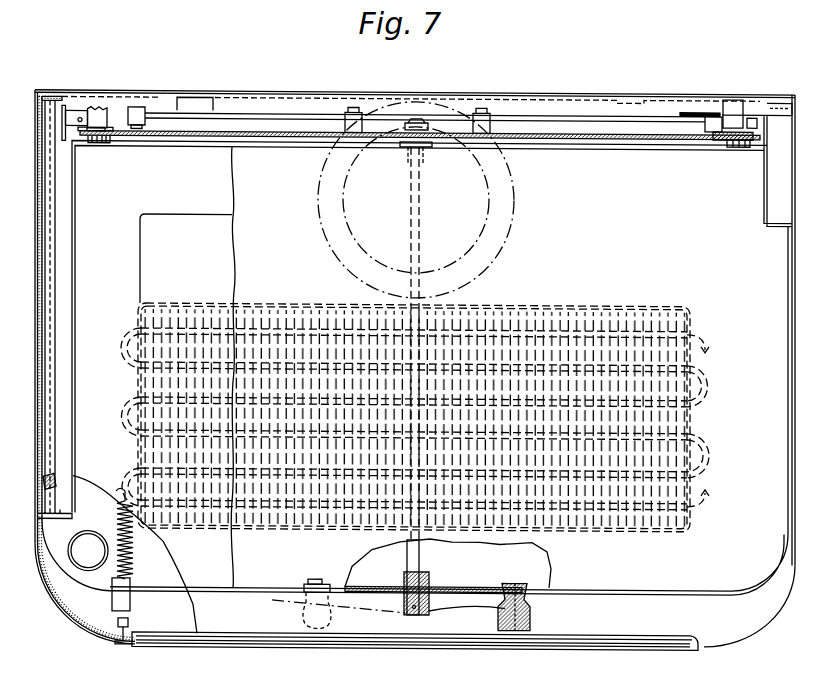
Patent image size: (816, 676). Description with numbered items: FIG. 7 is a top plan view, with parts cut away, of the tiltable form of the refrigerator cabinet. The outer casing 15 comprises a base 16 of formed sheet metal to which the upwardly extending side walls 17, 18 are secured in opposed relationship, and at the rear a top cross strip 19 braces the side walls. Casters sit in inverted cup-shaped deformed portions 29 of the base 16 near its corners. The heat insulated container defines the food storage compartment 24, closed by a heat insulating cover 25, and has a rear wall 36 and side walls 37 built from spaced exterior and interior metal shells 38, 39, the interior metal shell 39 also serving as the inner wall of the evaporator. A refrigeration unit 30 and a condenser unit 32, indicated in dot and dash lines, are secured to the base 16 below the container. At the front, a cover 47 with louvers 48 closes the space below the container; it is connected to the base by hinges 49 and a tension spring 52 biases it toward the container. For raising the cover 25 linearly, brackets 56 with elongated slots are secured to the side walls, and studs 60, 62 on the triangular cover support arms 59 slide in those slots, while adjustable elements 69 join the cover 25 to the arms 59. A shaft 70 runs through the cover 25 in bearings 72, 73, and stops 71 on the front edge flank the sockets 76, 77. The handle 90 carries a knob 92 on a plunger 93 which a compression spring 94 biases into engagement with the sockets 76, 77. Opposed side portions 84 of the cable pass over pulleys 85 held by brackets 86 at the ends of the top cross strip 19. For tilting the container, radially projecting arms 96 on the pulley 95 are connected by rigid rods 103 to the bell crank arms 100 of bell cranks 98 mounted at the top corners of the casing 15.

The outer casing 15 is at (27, 212).
The base 16 is at (52, 548).
The side wall 17 is at (37, 388).
The side wall 18 is at (791, 316).
The top cross strip 19 is at (652, 90).
The food storage compartment 24 is at (180, 213).
The cover 25 is at (740, 484).
The inverted cup-shaped deformed portions 29 is at (82, 558).
The refrigeration unit 30 is at (513, 212).
The condenser unit 32 is at (585, 328).
The rear wall 36 is at (216, 203).
The side walls 37 is at (120, 278).
The exterior metal shell 38 is at (279, 140).
The interior metal shell 39 is at (141, 244).
The cover 47 is at (733, 638).
The louvers 48 is at (558, 647).
The hinges 49 is at (112, 596).
The tension spring 52 is at (132, 558).
The bracket 56 is at (63, 106).
The cover support arms 59 is at (40, 296).
The stud 60 is at (753, 113).
The stud 62 is at (78, 110).
The adjustable elements 69 is at (56, 480).
The shaft 70 is at (420, 548).
The stops 71 is at (304, 590).
The bearing 72 is at (426, 584).
The bearing 73 is at (424, 148).
The socket 76 is at (513, 580).
The socket 77 is at (318, 578).
The opposed side portions of the cable 84 is at (268, 136).
The pulleys 85 is at (100, 143).
The brackets 86 is at (100, 107).
The handle 90 is at (440, 606).
The knob 92 is at (531, 615).
The plunger 93 is at (531, 597).
The compression spring 94 is at (534, 605).
The pulley 95 is at (420, 118).
The radially projecting arms 96 is at (352, 110).
The bell cranks 98 is at (186, 96).
The bell crank arm 100 is at (138, 106).
The rods 103 is at (224, 112).